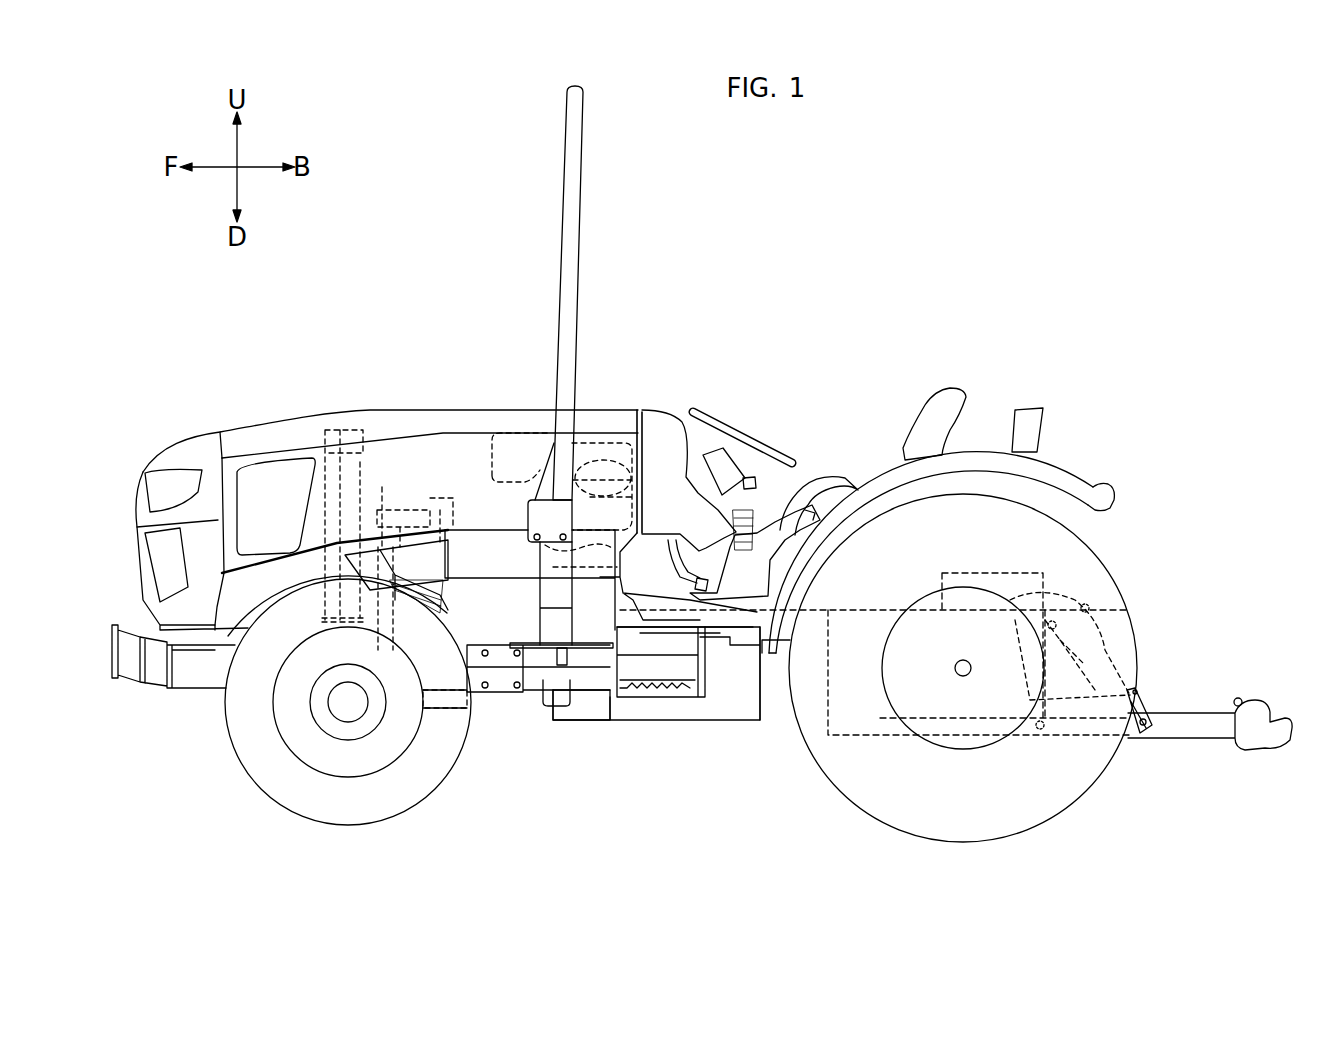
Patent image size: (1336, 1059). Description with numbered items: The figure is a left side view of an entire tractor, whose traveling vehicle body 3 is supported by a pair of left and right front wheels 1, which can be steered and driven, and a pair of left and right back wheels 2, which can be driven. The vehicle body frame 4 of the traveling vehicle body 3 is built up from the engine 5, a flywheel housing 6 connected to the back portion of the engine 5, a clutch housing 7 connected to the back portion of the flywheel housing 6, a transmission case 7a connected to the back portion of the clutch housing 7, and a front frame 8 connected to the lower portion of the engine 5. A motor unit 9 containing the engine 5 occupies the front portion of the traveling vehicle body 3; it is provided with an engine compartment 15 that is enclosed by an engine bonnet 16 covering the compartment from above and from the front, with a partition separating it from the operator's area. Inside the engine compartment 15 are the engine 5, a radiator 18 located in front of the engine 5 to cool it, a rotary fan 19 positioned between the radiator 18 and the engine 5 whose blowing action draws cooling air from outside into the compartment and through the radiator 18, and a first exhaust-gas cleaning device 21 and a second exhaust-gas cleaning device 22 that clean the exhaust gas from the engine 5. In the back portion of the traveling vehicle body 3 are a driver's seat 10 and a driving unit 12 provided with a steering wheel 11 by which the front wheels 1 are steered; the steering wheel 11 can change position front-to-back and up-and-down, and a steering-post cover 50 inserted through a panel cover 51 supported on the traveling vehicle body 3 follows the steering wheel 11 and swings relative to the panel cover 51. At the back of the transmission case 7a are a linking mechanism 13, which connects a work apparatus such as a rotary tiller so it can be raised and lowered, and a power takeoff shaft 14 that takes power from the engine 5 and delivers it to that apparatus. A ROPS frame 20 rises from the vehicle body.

The front wheels 1 is at (277, 792).
The back wheels 2 is at (1065, 793).
The traveling vehicle body 3 is at (623, 382).
The vehicle body frame 4 is at (698, 722).
The engine 5 is at (497, 640).
The flywheel housing 6 is at (585, 720).
The clutch housing 7 is at (765, 725).
The transmission case 7a is at (885, 738).
The front frame 8 is at (195, 690).
The motor unit 9 is at (380, 410).
The driver's seat 10 is at (915, 432).
The steering wheel 11 is at (728, 432).
The driving unit 12 is at (833, 375).
The linking mechanism 13 is at (1216, 650).
The power takeoff shaft 14 is at (1125, 650).
The engine compartment 15 is at (473, 552).
The engine bonnet 16 is at (333, 408).
The radiator 18 is at (300, 452).
The rotary fan 19 is at (390, 530).
The ROPS frame 20 is at (575, 167).
The first exhaust-gas cleaning device 21 is at (505, 508).
The second exhaust-gas cleaning device 22 is at (642, 500).
The steering-post cover 50 is at (727, 467).
The panel cover 51 is at (715, 525).